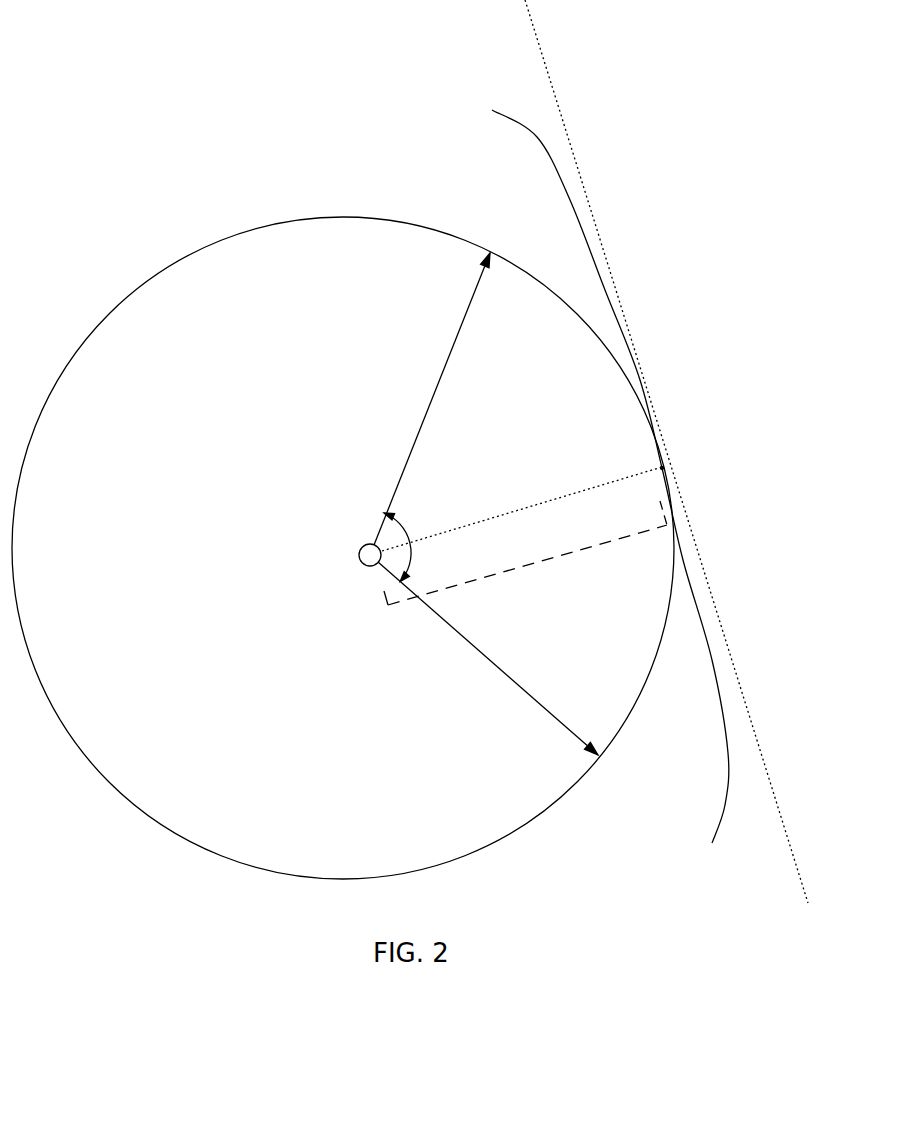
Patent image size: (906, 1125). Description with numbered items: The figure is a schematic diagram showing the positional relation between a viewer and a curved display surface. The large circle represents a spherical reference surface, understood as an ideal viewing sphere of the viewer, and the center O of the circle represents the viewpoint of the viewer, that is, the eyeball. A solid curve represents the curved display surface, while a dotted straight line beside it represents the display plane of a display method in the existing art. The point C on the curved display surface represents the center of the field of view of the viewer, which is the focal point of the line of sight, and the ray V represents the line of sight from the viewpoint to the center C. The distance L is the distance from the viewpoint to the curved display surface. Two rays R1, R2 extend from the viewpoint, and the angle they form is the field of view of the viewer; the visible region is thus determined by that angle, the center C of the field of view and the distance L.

The center of the circle O is at (362, 562).
The ray R1 is at (432, 398).
The ray R2 is at (488, 663).
The ray V is at (522, 509).
The center of the field of view C is at (642, 460).
The distance L is at (525, 561).